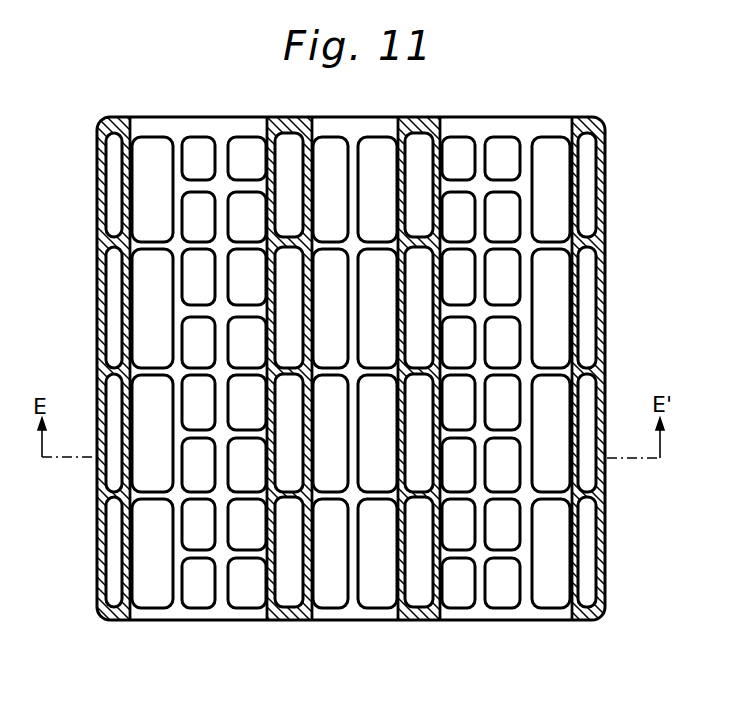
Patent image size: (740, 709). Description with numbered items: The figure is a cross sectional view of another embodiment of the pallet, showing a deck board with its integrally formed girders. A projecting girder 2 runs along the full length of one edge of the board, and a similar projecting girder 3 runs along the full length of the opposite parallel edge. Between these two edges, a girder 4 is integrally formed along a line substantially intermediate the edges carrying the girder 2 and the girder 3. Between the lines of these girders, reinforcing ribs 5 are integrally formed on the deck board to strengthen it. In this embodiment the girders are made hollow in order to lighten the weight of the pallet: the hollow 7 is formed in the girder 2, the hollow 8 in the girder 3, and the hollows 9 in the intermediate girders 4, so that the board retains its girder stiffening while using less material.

The projecting girder 2 is at (122, 613).
The projecting girder 3 is at (595, 495).
The girder 4 is at (293, 617).
The reinforcing rib 5 is at (528, 333).
The hollow 7 is at (116, 589).
The hollow 8 is at (583, 588).
The hollow 9 is at (290, 588).